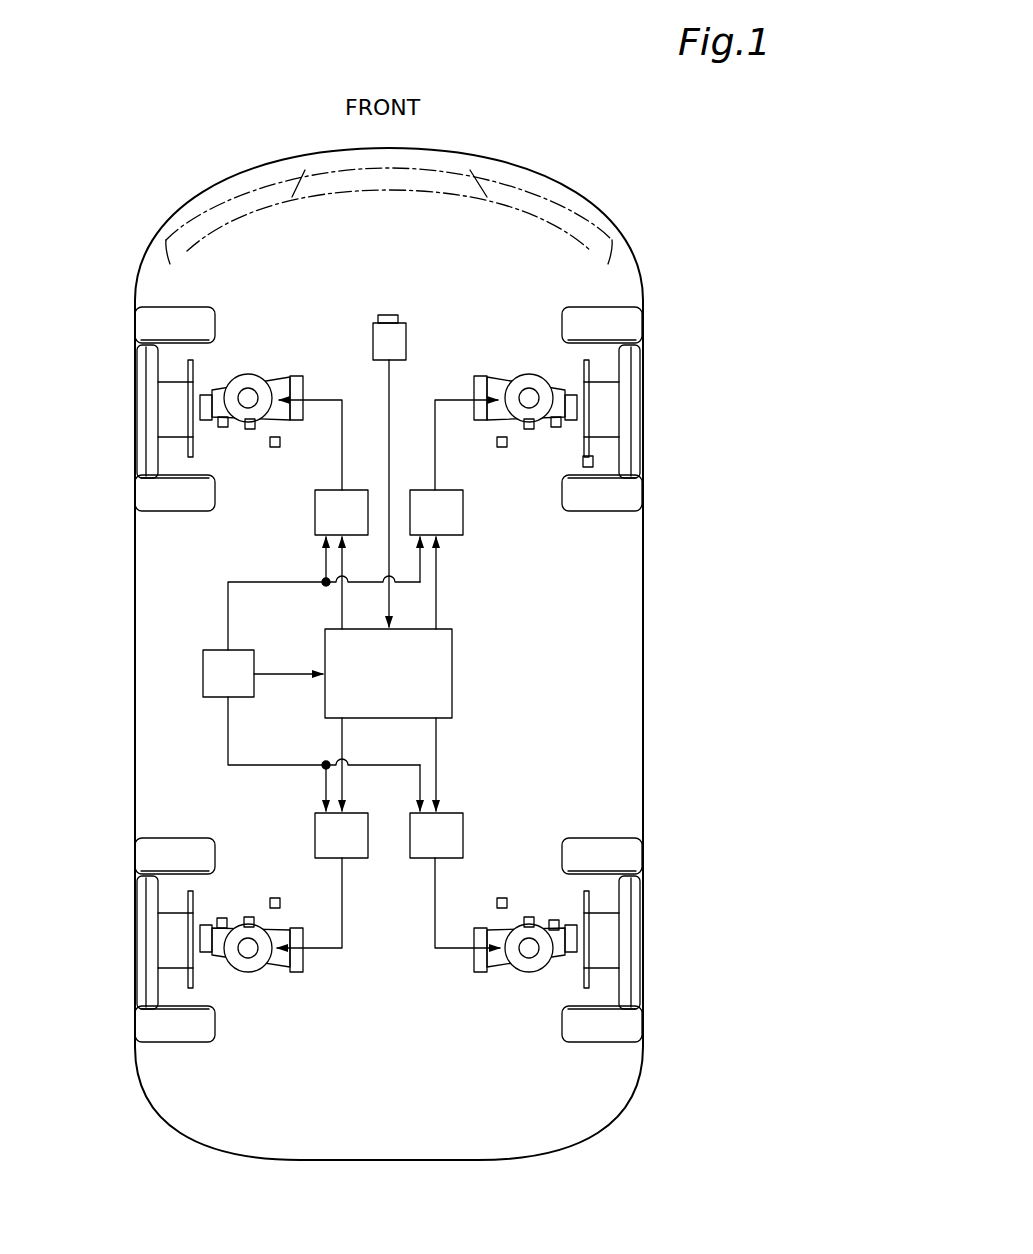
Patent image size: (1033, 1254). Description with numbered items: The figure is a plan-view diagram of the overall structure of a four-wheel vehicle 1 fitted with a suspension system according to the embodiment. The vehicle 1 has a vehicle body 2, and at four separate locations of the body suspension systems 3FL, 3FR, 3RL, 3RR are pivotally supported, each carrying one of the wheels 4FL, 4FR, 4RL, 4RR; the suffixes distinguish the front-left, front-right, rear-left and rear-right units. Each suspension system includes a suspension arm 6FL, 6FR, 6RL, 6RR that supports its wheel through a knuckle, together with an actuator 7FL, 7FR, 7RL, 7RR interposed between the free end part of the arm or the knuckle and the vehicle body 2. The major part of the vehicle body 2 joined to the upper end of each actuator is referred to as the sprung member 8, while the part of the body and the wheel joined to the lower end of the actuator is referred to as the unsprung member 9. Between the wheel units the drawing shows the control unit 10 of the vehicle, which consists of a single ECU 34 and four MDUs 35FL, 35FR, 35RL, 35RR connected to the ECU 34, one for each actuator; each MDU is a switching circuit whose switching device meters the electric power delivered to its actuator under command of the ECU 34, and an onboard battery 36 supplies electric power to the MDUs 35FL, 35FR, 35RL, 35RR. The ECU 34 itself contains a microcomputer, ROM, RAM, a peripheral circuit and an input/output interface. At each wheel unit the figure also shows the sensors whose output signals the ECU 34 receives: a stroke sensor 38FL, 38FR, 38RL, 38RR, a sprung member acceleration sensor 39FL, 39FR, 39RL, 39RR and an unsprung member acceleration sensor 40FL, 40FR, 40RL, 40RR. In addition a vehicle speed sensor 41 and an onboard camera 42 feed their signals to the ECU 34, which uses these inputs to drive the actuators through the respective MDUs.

The four-wheel vehicle 1 is at (393, 626).
The vehicle body 2 is at (566, 188).
The sprung member 8 is at (622, 242).
The suspension system 3FL is at (190, 404).
The suspension system 3FR is at (592, 404).
The suspension system 3RL is at (191, 954).
The suspension system 3RR is at (592, 954).
The wheel 4FL is at (140, 331).
The wheel 4FR is at (636, 331).
The wheel 4RL is at (140, 863).
The wheel 4RR is at (636, 863).
The suspension arm 6FL is at (279, 381).
The suspension arm 6FR is at (499, 381).
The suspension arm 6RL is at (279, 972).
The suspension arm 6RR is at (498, 972).
The actuator 7FL is at (242, 375).
The actuator 7FR is at (536, 375).
The actuator 7RL is at (243, 973).
The actuator 7RR is at (536, 973).
The unsprung member 9 is at (283, 387).
The control unit 10 is at (325, 612).
The ECU 34 is at (452, 672).
The MDU 35FL is at (318, 533).
The MDU 35FR is at (461, 534).
The MDU 35RL is at (358, 859).
The MDU 35RR is at (461, 813).
The onboard battery 36 is at (203, 675).
The stroke sensor 38FL is at (250, 429).
The stroke sensor 38FR is at (529, 429).
The stroke sensor 38RL is at (249, 917).
The stroke sensor 38RR is at (529, 917).
The sprung member acceleration sensor 39FL is at (276, 447).
The sprung member acceleration sensor 39FR is at (502, 447).
The sprung member acceleration sensor 39RL is at (276, 898).
The sprung member acceleration sensor 39RR is at (502, 898).
The unsprung member acceleration sensor 40FL is at (223, 427).
The unsprung member acceleration sensor 40FR is at (556, 427).
The unsprung member acceleration sensor 40RL is at (222, 918).
The unsprung member acceleration sensor 40RR is at (554, 920).
The vehicle speed sensor 41 is at (593, 462).
The onboard camera 42 is at (403, 338).